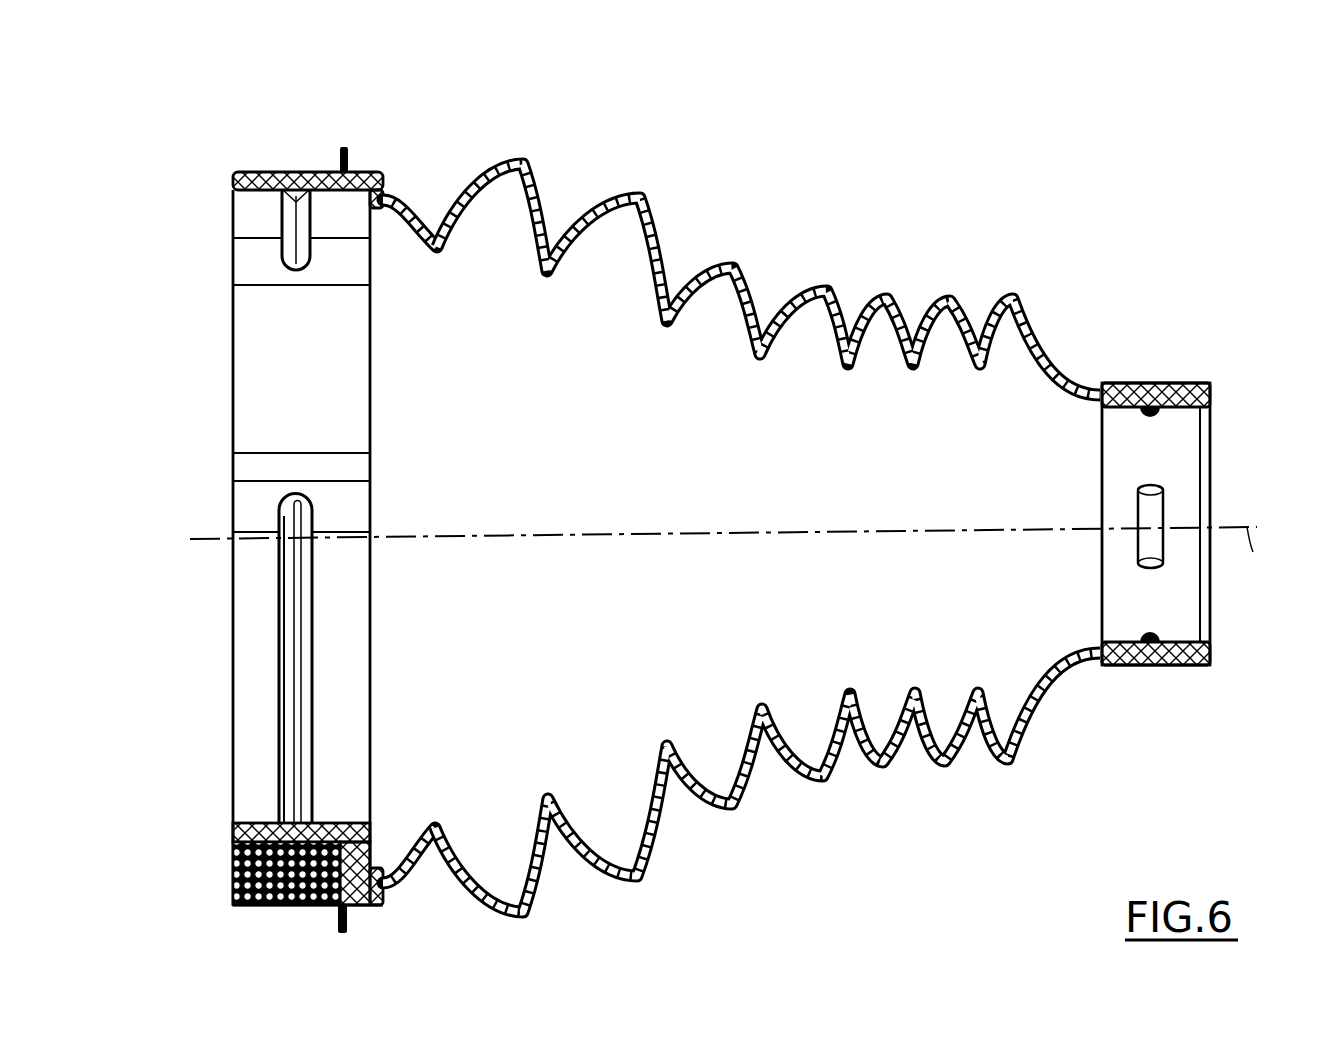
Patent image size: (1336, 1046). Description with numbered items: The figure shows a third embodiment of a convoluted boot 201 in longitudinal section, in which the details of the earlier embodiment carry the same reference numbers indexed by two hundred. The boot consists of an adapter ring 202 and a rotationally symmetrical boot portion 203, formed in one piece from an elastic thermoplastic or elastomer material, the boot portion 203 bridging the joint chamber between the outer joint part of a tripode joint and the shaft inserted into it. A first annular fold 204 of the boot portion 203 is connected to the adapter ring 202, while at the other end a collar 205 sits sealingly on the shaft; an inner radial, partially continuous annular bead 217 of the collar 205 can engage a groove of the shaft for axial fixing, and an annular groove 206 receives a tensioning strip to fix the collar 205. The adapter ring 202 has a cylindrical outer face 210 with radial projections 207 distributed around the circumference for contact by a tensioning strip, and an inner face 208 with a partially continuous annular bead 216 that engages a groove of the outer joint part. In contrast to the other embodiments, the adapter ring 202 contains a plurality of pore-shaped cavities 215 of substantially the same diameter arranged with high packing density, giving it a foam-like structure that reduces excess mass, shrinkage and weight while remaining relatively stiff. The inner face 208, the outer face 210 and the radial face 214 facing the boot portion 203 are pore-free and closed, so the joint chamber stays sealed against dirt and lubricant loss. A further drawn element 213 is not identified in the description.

The convoluted boot 201 is at (768, 135).
The adapter ring 202 is at (240, 170).
The boot portion 203 is at (733, 258).
The first annular fold 204 is at (407, 185).
The collar 205 is at (1207, 380).
The annular groove 206 is at (1150, 385).
The radial projections 207 is at (344, 143).
The inner face 208 is at (255, 823).
The outer face 210 is at (280, 183).
The sealing ring 213 is at (232, 832).
The radial face 214 is at (377, 837).
The pore-shaped cavities 215 is at (233, 887).
The annular bead 216 is at (292, 593).
The annular bead 217 is at (1153, 507).